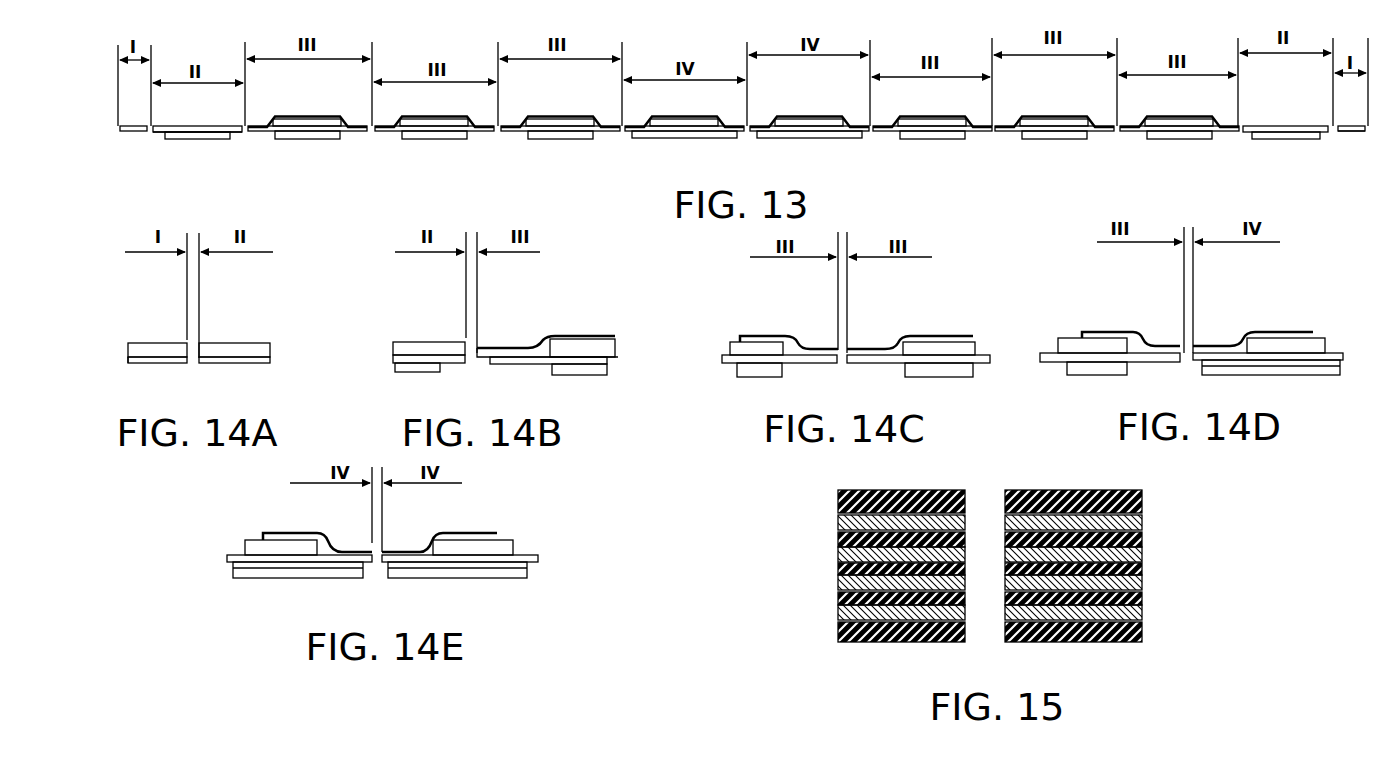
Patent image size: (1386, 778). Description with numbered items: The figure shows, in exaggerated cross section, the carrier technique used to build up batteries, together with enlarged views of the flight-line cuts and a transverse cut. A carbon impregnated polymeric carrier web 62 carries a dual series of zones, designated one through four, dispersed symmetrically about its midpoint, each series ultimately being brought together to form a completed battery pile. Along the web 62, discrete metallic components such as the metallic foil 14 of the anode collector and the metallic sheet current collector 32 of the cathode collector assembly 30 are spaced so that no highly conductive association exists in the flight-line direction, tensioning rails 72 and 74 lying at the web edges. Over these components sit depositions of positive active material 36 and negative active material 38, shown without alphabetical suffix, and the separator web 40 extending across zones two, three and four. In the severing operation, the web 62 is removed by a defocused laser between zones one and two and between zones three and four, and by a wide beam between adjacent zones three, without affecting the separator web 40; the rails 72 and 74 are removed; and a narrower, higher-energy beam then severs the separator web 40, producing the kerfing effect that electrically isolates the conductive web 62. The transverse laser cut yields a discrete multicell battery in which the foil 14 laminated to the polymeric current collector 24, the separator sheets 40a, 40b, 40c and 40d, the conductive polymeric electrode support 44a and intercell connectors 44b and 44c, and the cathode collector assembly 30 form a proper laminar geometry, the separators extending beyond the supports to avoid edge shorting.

In FIG. 14A, the metallic foil 14 is at (153, 345).
In FIG. 14B, the metallic foil 14 is at (418, 343).
In FIG. 15, the metallic foil 14 is at (906, 490).
In FIG. 15, the polymeric electrically conductive current collector 24 is at (840, 503).
In FIG. 14B, the cathode electrode current collector assembly 30 is at (570, 375).
In FIG. 15, the cathode electrode current collector assembly 30 is at (837, 641).
In FIG. 13, the metallic sheet current collector 32 is at (693, 139).
In FIG. 14D, the metallic sheet current collector 32 is at (1292, 375).
In FIG. 14E, the metallic sheet current collector 32 is at (312, 578).
In FIG. 13, the positive active material 36 is at (325, 121).
In FIG. 14B, the positive active material 36 is at (603, 344).
In FIG. 14C, the positive active material 36 is at (962, 345).
In FIG. 14D, the positive active material 36 is at (1093, 345).
In FIG. 14E, the positive active material 36 is at (250, 548).
In FIG. 13, the negative active material 38 is at (196, 139).
In FIG. 14B, the negative active material 38 is at (412, 372).
In FIG. 14C, the negative active material 38 is at (760, 377).
In FIG. 14D, the negative active material 38 is at (1103, 375).
In FIG. 13, the separator web 40 is at (293, 115).
In FIG. 14B, the separator web 40 is at (582, 337).
In FIG. 14C, the separator web 40 is at (762, 335).
In FIG. 14D, the separator web 40 is at (1112, 332).
In FIG. 14E, the separator web 40 is at (292, 533).
In FIG. 15, the sheet separator 40a is at (840, 613).
In FIG. 15, the separator sheet 40b is at (840, 583).
In FIG. 15, the separator sheet 40c is at (840, 555).
In FIG. 15, the separator sheet 40d is at (840, 522).
In FIG. 15, the conductive polymeric sheet electrode support 44a is at (1142, 597).
In FIG. 15, the intercell connector 44b is at (1142, 568).
In FIG. 15, the intercell connector 44c is at (1142, 538).
In FIG. 13, the carrier web 62 is at (237, 133).
In FIG. 14A, the carrier web 62 is at (167, 364).
In FIG. 14B, the carrier web 62 is at (452, 363).
In FIG. 14C, the carrier web 62 is at (724, 357).
In FIG. 14D, the carrier web 62 is at (1046, 354).
In FIG. 14E, the carrier web 62 is at (230, 558).
In FIG. 13, the tensioning rail 72 is at (1290, 124).
In FIG. 13, the tensioning rail 74 is at (175, 124).
In FIG. 14A, the tensioning rail 74 is at (140, 364).